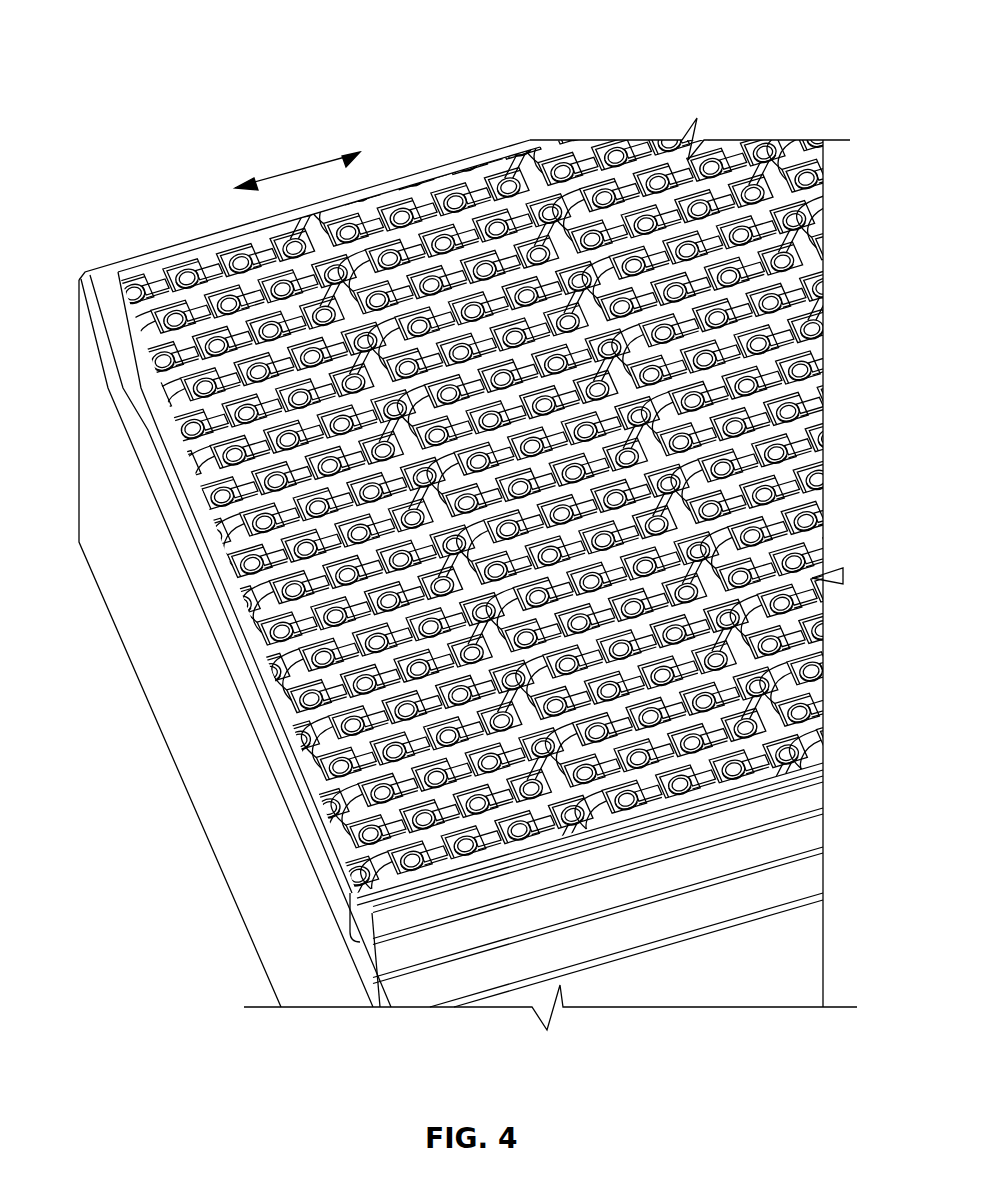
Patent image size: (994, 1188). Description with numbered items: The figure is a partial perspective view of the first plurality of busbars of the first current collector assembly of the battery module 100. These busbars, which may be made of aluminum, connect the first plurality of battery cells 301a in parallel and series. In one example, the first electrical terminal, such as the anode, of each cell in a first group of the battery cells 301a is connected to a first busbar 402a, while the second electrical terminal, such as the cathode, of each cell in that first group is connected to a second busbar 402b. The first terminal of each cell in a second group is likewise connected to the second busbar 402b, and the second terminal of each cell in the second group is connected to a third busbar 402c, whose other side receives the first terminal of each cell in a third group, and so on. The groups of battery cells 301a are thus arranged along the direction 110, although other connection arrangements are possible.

The battery module 100 is at (126, 58).
The direction 110 is at (300, 167).
The first plurality of battery cells 301a is at (613, 197).
The first busbar 402a is at (488, 768).
The second busbar 402b is at (608, 780).
The third busbar 402c is at (740, 707).